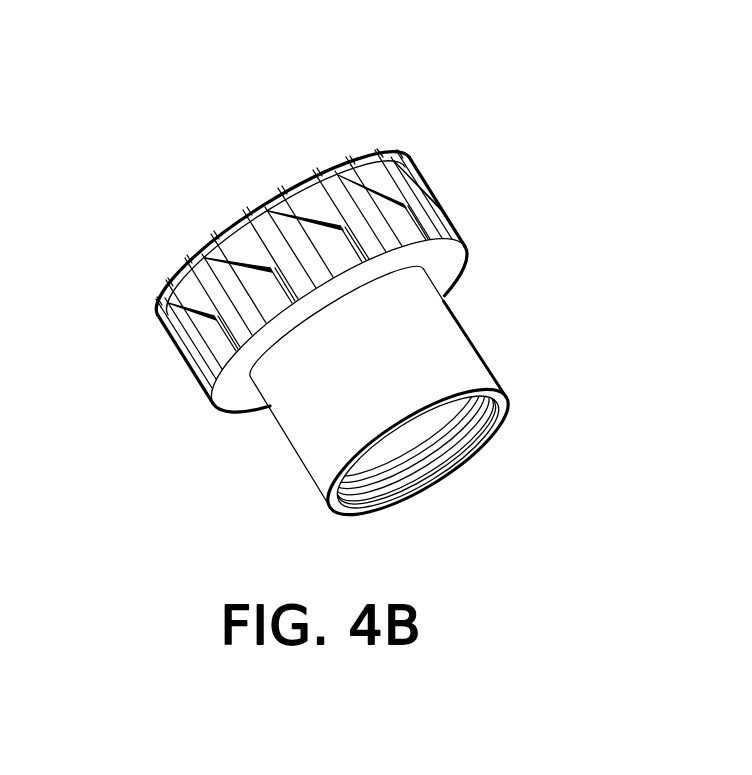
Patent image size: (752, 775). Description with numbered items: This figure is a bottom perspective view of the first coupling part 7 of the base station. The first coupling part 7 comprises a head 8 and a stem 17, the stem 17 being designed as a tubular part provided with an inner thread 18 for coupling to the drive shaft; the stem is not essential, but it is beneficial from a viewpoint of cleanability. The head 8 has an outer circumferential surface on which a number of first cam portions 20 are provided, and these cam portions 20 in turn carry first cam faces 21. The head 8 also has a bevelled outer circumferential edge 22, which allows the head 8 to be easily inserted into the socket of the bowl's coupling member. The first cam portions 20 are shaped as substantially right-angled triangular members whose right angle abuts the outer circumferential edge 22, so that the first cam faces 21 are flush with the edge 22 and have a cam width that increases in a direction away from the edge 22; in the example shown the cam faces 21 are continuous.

The first coupling part 7 is at (173, 418).
The head 8 is at (288, 184).
The stem 17 is at (293, 430).
The inner thread 18 is at (443, 460).
The first cam portions 20 is at (367, 181).
The first cam faces 21 is at (412, 198).
The bevelled outer circumferential edge 22 is at (420, 145).